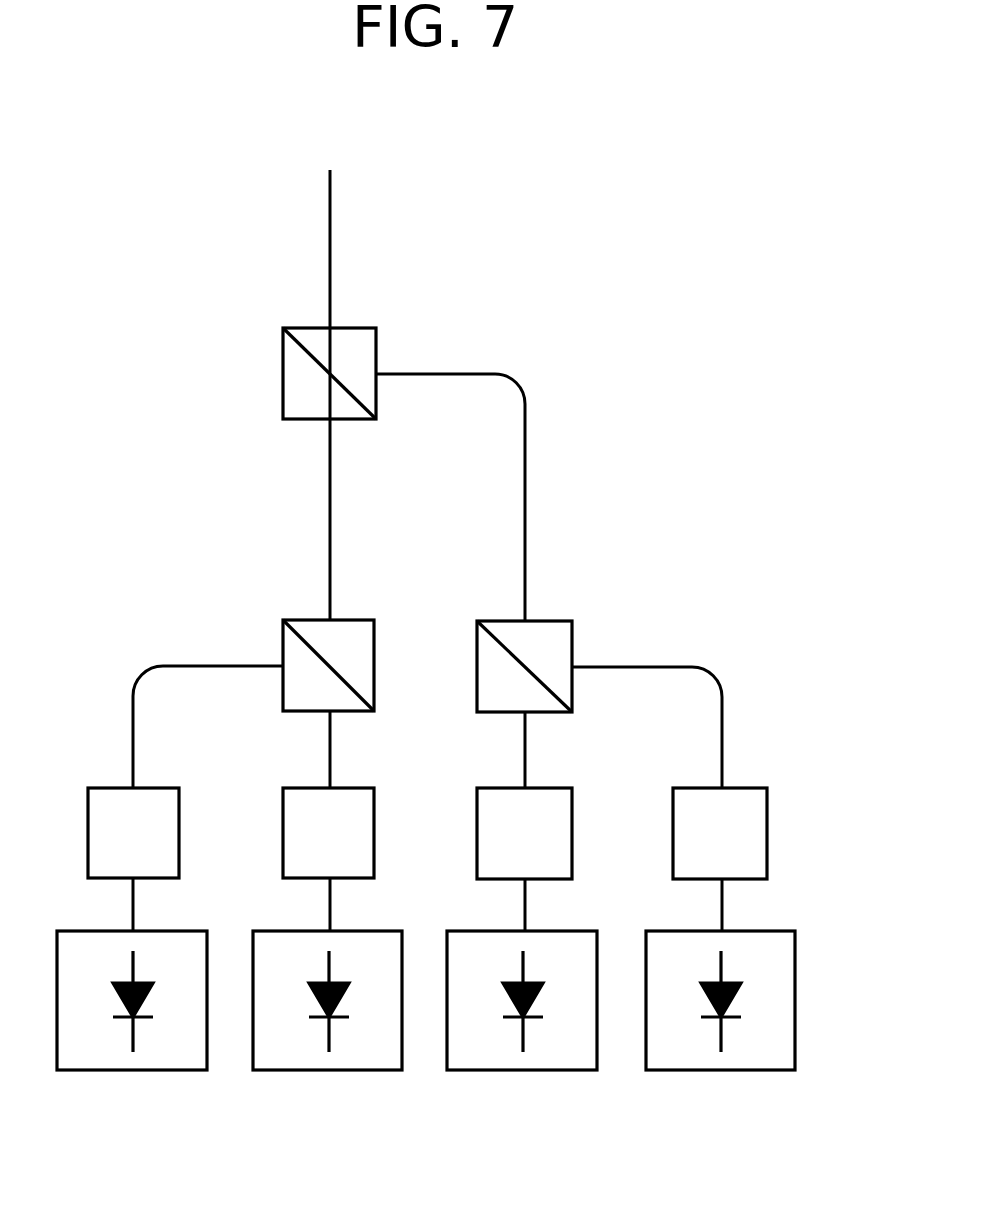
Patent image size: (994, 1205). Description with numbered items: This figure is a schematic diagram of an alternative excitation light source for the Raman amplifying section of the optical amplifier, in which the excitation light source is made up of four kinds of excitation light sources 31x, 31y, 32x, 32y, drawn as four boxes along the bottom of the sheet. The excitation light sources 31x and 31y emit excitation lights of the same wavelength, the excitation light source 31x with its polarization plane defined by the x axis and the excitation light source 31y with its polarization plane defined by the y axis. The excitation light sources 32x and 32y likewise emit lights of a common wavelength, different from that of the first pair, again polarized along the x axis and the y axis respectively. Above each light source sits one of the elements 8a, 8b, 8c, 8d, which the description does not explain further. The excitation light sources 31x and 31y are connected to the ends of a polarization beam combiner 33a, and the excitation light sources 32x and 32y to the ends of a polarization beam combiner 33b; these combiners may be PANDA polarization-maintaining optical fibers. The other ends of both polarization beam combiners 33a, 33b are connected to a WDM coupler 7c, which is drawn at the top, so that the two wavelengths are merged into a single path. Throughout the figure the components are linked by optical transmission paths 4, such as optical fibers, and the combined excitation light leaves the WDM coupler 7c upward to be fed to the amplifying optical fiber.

The optical transmission paths 4 is at (331, 231).
The WDM coupler 7c is at (377, 346).
The polarization beam combiner 33a is at (362, 620).
The polarization beam combiner 33b is at (548, 620).
The optical filter 8a is at (180, 828).
The optical filter 8b is at (375, 828).
The optical filter 8c is at (573, 828).
The optical filter 8d is at (768, 828).
The excitation light source 31x is at (134, 1071).
The excitation light source 31y is at (329, 1071).
The excitation light source 32x is at (524, 1071).
The excitation light source 32y is at (722, 1071).